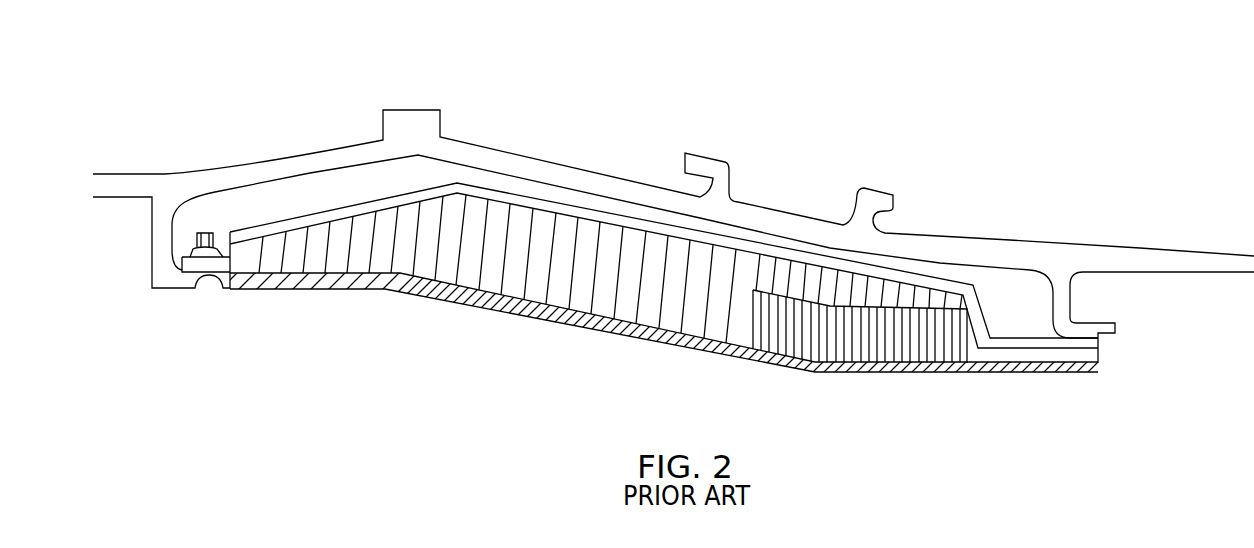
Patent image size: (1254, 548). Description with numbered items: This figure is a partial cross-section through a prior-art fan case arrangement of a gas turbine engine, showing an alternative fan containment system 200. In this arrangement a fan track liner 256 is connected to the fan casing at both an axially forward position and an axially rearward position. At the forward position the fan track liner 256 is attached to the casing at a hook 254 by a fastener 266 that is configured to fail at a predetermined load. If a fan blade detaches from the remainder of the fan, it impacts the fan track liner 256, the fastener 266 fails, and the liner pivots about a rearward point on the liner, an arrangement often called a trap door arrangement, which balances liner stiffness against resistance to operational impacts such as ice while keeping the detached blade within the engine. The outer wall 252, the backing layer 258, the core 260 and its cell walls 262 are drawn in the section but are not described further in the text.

The fan containment system 200 is at (847, 98).
The outer wall 252 is at (310, 162).
The hook 254 is at (160, 262).
The fan track liner 256 is at (272, 212).
The back skin 258 is at (422, 273).
The honeycomb core 260 is at (527, 225).
The cell wall 262 is at (458, 255).
The fastener 266 is at (203, 243).